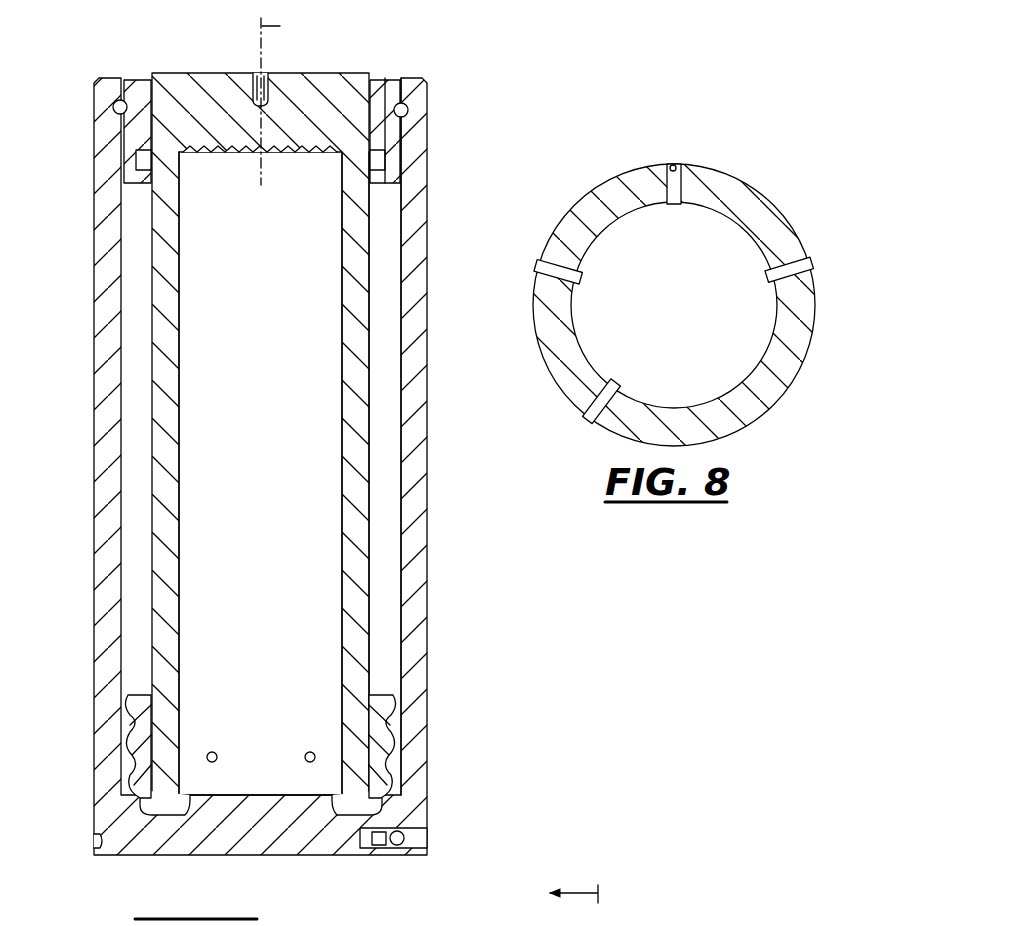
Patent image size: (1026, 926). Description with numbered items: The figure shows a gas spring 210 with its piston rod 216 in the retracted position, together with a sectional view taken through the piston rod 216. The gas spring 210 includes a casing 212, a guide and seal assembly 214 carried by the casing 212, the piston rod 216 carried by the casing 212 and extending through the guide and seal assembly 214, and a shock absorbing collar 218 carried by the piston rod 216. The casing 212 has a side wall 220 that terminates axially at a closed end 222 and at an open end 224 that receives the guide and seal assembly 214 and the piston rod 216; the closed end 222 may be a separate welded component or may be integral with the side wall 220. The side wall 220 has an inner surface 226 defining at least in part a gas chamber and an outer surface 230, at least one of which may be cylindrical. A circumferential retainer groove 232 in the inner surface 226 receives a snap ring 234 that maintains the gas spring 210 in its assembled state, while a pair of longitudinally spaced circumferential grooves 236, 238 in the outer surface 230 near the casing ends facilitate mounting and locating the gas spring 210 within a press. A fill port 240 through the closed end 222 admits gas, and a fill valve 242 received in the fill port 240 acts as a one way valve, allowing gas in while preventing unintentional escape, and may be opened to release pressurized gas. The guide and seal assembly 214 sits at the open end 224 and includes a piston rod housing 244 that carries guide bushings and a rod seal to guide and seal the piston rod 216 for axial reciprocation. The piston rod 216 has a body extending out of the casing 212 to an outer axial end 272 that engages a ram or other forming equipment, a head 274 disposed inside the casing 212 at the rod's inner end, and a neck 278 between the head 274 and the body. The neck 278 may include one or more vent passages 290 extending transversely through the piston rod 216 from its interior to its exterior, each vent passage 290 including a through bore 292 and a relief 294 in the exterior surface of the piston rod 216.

In FIG. 6, the gas spring 210 is at (323, 446).
In FIG. 6, the casing 212 is at (321, 467).
In FIG. 6, the guide and seal assembly 214 is at (385, 62).
In FIG. 6, the piston rod 216 is at (383, 534).
In FIG. 6, the shock absorbing collar 218 is at (400, 727).
In FIG. 6, the side wall 220 is at (445, 463).
In FIG. 6, the closed end 222 is at (283, 818).
In FIG. 6, the open end 224 is at (415, 76).
In FIG. 6, the inner surface 226 is at (393, 655).
In FIG. 6, the outer surface 230 is at (428, 590).
In FIG. 6, the retainer groove 232 is at (406, 108).
In FIG. 6, the snap ring 234 is at (122, 100).
In FIG. 6, the circumferential groove 236 is at (423, 128).
In FIG. 6, the circumferential groove 238 is at (98, 836).
In FIG. 6, the fill port 240 is at (375, 834).
In FIG. 6, the fill valve 242 is at (404, 837).
In FIG. 6, the piston rod housing 244 is at (137, 75).
In FIG. 6, the outer axial end 272 is at (318, 60).
In FIG. 6, the head 274 is at (158, 788).
In FIG. 6, the neck 278 is at (162, 730).
In FIG. 8, the neck 278 is at (686, 267).
In FIG. 8, the vent passage 290 is at (662, 160).
In FIG. 8, the through bore 292 is at (677, 186).
In FIG. 8, the relief 294 is at (672, 160).